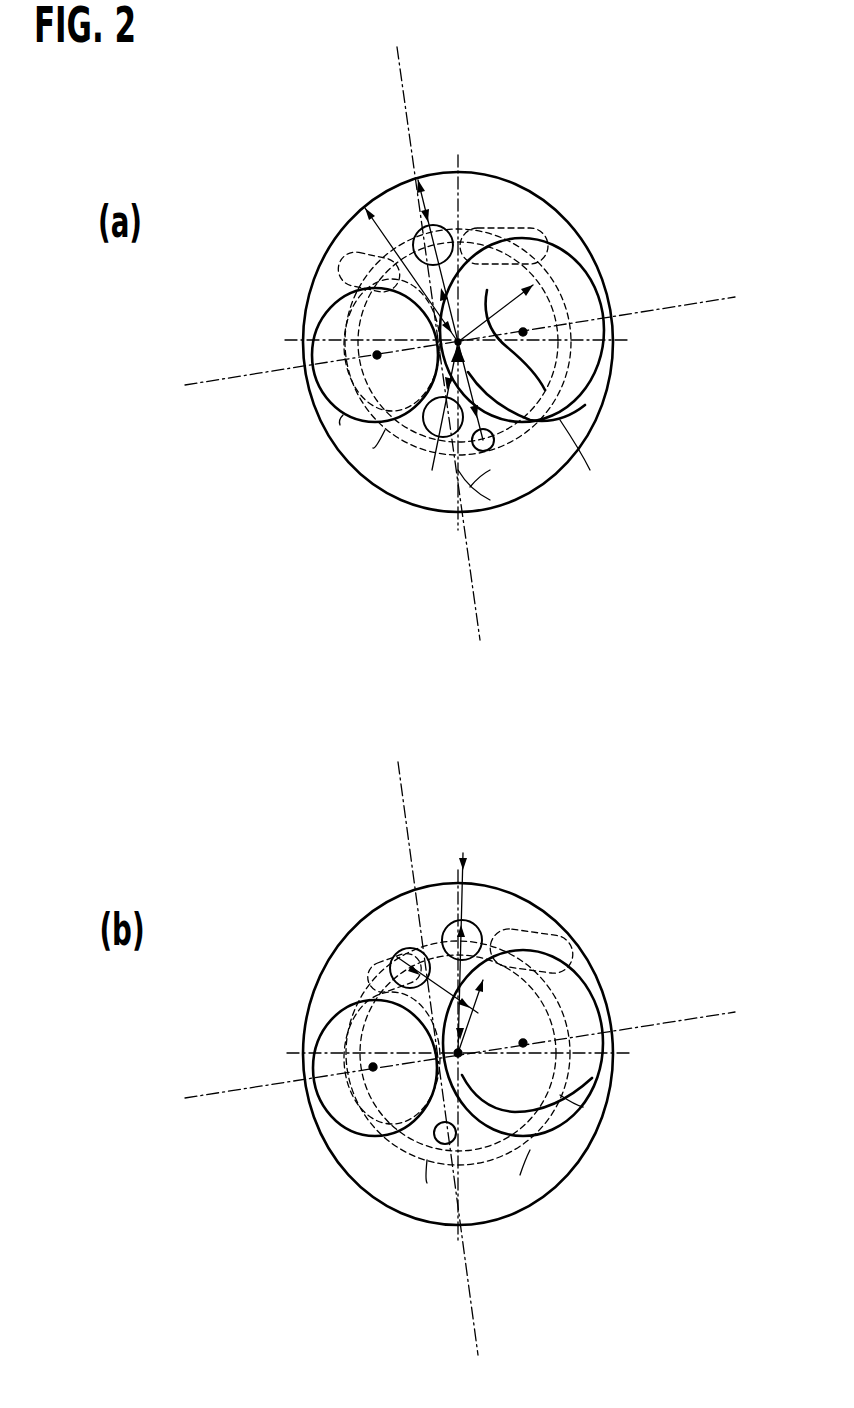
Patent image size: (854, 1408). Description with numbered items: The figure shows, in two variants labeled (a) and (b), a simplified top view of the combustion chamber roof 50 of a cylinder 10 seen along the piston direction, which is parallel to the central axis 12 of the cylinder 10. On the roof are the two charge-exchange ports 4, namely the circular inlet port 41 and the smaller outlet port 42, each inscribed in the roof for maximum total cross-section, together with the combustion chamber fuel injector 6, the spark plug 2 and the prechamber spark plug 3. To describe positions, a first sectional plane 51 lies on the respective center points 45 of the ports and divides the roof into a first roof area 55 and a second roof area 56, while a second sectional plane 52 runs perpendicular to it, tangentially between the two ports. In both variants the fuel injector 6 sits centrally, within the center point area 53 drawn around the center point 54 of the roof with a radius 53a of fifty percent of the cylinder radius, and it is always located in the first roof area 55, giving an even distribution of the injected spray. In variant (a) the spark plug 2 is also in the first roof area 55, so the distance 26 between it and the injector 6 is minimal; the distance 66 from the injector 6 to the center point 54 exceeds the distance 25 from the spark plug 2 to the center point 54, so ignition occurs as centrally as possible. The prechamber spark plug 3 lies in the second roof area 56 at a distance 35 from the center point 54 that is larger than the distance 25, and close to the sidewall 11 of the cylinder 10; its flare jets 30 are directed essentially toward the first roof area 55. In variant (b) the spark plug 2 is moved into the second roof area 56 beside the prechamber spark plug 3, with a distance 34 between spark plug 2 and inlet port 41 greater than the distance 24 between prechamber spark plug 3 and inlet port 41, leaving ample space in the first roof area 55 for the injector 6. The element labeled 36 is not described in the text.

The spark plug 2 is at (433, 433).
The prechamber spark plug 3 is at (440, 195).
The charge-exchange ports 4 is at (607, 287).
The combustion chamber fuel injector 6 is at (468, 485).
The cylinder 10 is at (578, 180).
The sidewall 11 is at (470, 170).
The central axis 12 is at (360, 237).
The distance 24 is at (465, 990).
The distance 25 is at (343, 415).
The distance 26 is at (440, 470).
The flare jets 30 is at (495, 223).
The distance 34 is at (400, 1010).
The distance 35 is at (485, 277).
The gear wheel 36 is at (400, 215).
The inlet port 41 is at (612, 400).
The outlet port 42 is at (343, 390).
The center points 45 is at (305, 343).
The combustion chamber roof 50 is at (470, 487).
The first sectional plane 51 is at (685, 307).
The second sectional plane 52 is at (400, 95).
The center point area 53 is at (575, 375).
The radius 53a is at (483, 293).
The center point 54 is at (580, 453).
The first roof area 55 is at (373, 448).
The second roof area 56 is at (390, 205).
The distance 66 is at (483, 460).